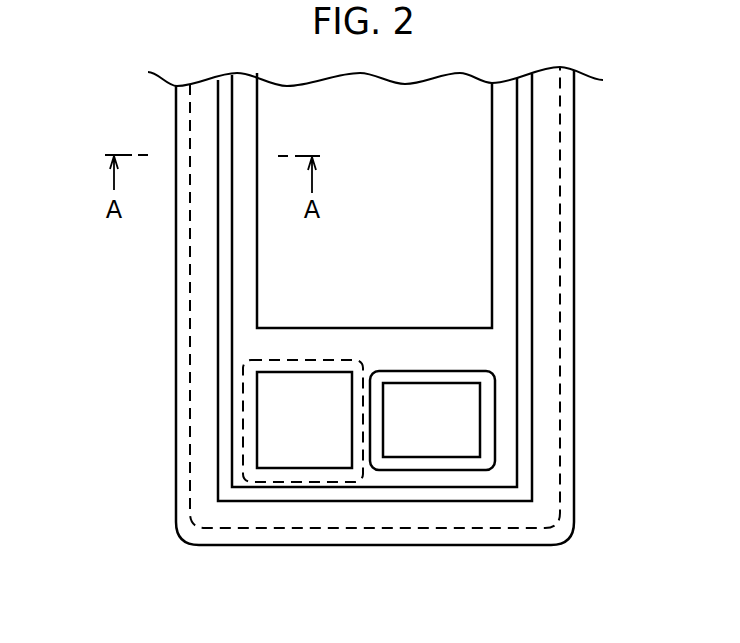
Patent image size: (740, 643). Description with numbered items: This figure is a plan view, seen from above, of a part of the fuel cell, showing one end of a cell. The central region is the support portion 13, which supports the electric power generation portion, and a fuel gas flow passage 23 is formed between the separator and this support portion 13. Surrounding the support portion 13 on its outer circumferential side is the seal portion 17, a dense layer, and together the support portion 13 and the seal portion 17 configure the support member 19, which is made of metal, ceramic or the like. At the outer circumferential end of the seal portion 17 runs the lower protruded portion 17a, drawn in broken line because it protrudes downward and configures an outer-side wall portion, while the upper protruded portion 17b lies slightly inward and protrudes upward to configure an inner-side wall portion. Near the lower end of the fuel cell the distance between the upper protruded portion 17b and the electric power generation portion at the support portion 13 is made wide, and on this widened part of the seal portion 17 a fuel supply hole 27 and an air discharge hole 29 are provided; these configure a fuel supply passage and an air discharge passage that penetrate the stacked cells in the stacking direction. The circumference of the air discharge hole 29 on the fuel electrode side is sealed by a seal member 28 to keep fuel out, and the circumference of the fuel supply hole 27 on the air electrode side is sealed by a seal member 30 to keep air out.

The support portion 13 is at (287, 263).
The support member 19 is at (314, 307).
The seal portion 17 is at (183, 325).
The lower protruded portion 17a is at (202, 397).
The upper protruded portion 17b is at (222, 459).
The fuel gas flow passage 23 is at (395, 270).
The fuel supply hole 27 is at (317, 447).
The seal member 28 is at (495, 410).
The air discharge hole 29 is at (433, 447).
The seal member 30 is at (275, 482).